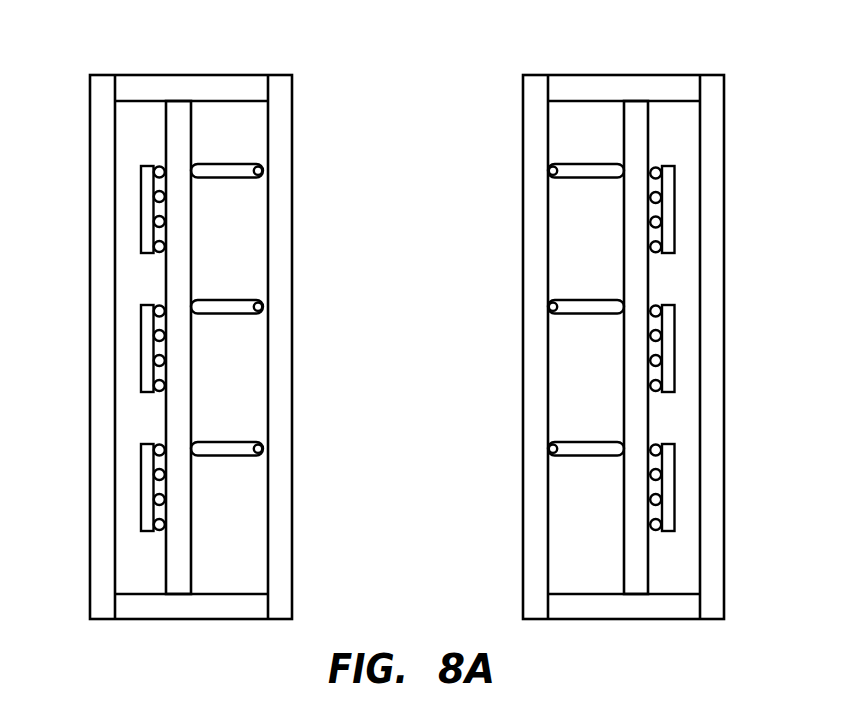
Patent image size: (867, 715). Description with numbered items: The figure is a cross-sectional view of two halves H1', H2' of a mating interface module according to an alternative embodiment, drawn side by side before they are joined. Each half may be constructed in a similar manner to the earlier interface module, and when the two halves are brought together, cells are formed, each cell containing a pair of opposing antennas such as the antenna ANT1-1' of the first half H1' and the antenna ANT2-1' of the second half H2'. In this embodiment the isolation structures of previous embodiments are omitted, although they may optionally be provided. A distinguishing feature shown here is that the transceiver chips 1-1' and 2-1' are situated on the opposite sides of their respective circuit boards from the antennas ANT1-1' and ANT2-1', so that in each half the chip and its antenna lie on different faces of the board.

The first half of interface module H1' is at (191, 312).
The second half of interface module H2' is at (623, 313).
The antenna ANT1-1' is at (296, 289).
The antenna ANT2-1' is at (522, 310).
The transceiver chip 1-1' is at (97, 348).
The transceiver chip 2-1' is at (720, 348).